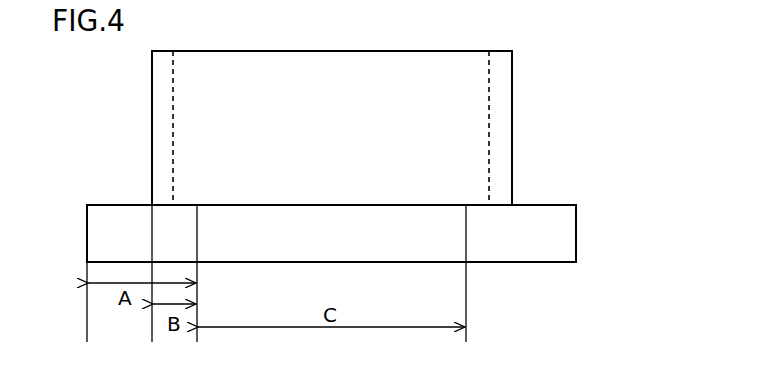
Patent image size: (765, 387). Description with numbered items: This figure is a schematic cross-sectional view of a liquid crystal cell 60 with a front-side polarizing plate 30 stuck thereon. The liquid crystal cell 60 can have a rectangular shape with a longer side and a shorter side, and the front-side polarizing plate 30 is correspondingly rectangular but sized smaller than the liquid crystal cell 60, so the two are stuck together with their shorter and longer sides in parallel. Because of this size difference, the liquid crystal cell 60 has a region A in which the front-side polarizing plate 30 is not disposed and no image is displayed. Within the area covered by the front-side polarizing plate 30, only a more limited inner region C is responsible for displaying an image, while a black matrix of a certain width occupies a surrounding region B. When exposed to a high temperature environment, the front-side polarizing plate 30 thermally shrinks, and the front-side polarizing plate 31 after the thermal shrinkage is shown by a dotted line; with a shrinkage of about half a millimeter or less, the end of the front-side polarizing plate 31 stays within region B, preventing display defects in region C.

The front-side polarizing plate 30 is at (152, 126).
The front-side polarizing plate after the thermal shrinkage 31 is at (489, 128).
The liquid crystal cell 60 is at (564, 234).